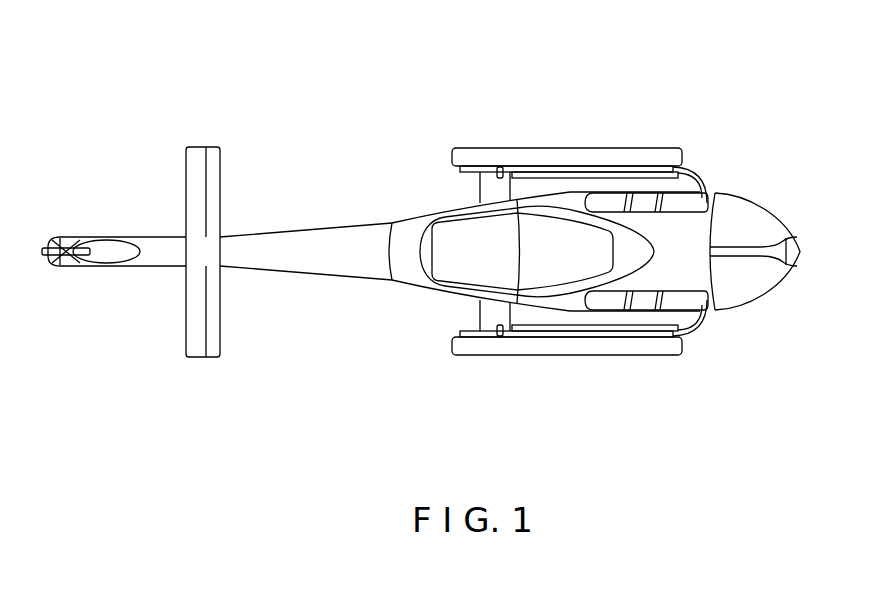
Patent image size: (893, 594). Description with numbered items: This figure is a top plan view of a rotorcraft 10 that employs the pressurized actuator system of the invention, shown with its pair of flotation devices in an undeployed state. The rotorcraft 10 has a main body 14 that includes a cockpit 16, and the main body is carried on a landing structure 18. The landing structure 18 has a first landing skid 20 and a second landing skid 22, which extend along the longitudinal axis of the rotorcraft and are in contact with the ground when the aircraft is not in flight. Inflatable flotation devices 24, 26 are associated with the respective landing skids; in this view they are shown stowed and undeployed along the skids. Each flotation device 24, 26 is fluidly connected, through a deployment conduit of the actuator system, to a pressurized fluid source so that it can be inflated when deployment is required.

The rotorcraft 10 is at (440, 93).
The main body 14 is at (716, 192).
The cockpit 16 is at (737, 230).
The landing structure 18 is at (699, 327).
The first landing skid 20 is at (640, 337).
The second landing skid 22 is at (634, 172).
The flotation device 24 is at (588, 355).
The flotation device 26 is at (537, 157).